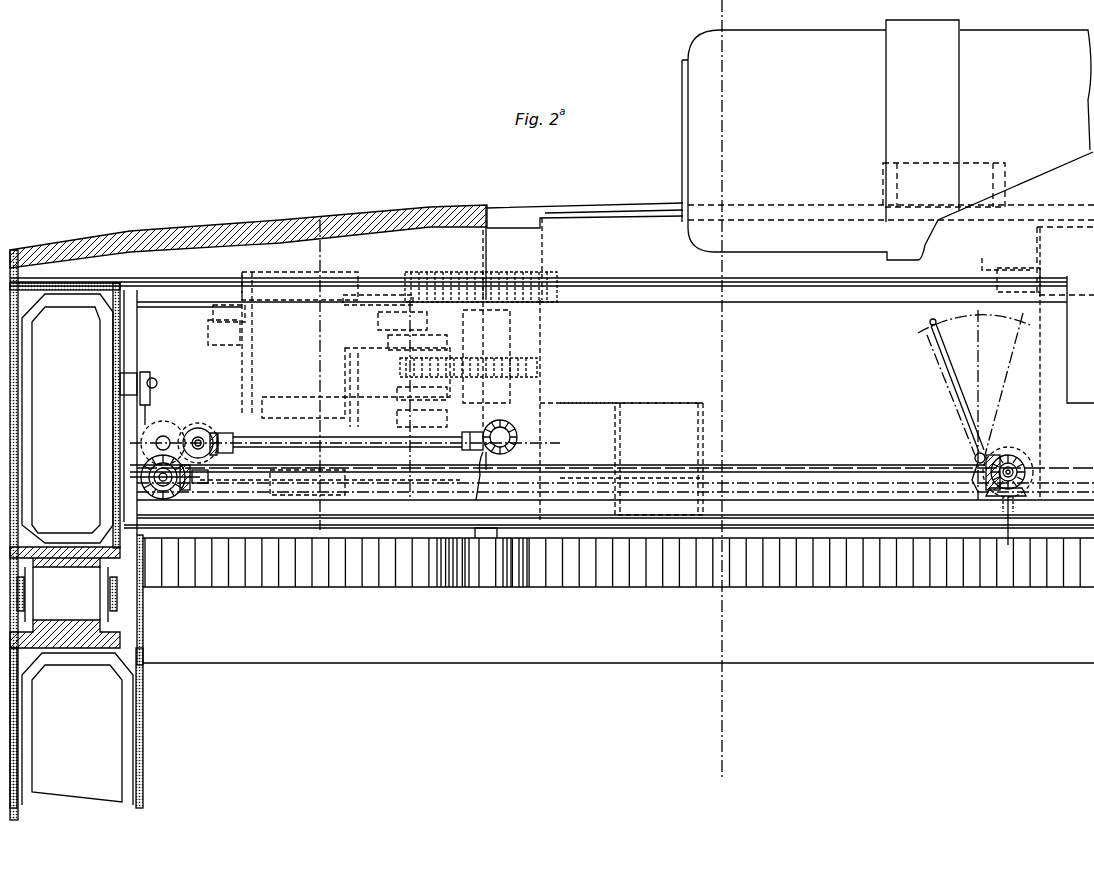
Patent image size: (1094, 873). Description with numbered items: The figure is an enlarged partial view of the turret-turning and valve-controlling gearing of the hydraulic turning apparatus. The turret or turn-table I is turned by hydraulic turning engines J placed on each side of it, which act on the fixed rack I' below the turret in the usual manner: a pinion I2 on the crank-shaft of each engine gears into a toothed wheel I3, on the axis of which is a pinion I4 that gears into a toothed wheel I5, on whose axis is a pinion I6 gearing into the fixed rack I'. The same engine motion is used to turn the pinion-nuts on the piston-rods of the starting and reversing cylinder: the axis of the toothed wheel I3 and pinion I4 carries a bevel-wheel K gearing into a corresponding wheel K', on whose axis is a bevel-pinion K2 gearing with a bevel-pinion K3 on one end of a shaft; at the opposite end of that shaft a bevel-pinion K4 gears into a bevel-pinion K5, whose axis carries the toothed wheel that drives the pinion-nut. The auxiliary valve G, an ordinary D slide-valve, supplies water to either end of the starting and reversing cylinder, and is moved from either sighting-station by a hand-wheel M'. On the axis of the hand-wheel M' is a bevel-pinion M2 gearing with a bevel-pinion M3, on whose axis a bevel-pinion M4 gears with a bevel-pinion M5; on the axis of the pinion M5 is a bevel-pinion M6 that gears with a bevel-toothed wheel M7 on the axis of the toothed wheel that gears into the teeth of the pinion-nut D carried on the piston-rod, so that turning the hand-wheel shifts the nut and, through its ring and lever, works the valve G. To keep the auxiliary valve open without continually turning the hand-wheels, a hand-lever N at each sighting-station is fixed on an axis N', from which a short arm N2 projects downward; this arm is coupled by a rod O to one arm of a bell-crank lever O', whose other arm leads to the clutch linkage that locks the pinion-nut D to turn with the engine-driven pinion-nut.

The turret I is at (76, 551).
The fixed rack I' is at (615, 596).
The pinion I2 is at (345, 365).
The toothed wheel I3 is at (540, 372).
The pinion I4 is at (510, 300).
The toothed wheel I5 is at (418, 282).
The pinion I6 is at (490, 580).
The hydraulic turning engine J is at (322, 486).
The auxiliary valve G is at (152, 380).
The pinion-nut D is at (163, 421).
The bevel-wheel K is at (506, 434).
The bevel-wheel K' is at (516, 462).
The bevel-pinion K2 is at (514, 440).
The bevel-pinion K3 is at (476, 500).
The bevel-pinion K4 is at (216, 438).
The bevel-pinion K5 is at (196, 428).
The hand-wheel M' is at (1011, 269).
The bevel-pinion M2 is at (1026, 490).
The bevel-pinion M3 is at (1020, 460).
The bevel-pinion M4 is at (1026, 472).
The bevel-pinion M5 is at (998, 458).
The bevel-pinion M6 is at (208, 475).
The bevel-toothed wheel M7 is at (147, 480).
The hand-lever N is at (974, 384).
The axis N' is at (960, 452).
The short arm N2 is at (975, 488).
The rod O is at (615, 492).
The bell-crank lever O' is at (330, 498).